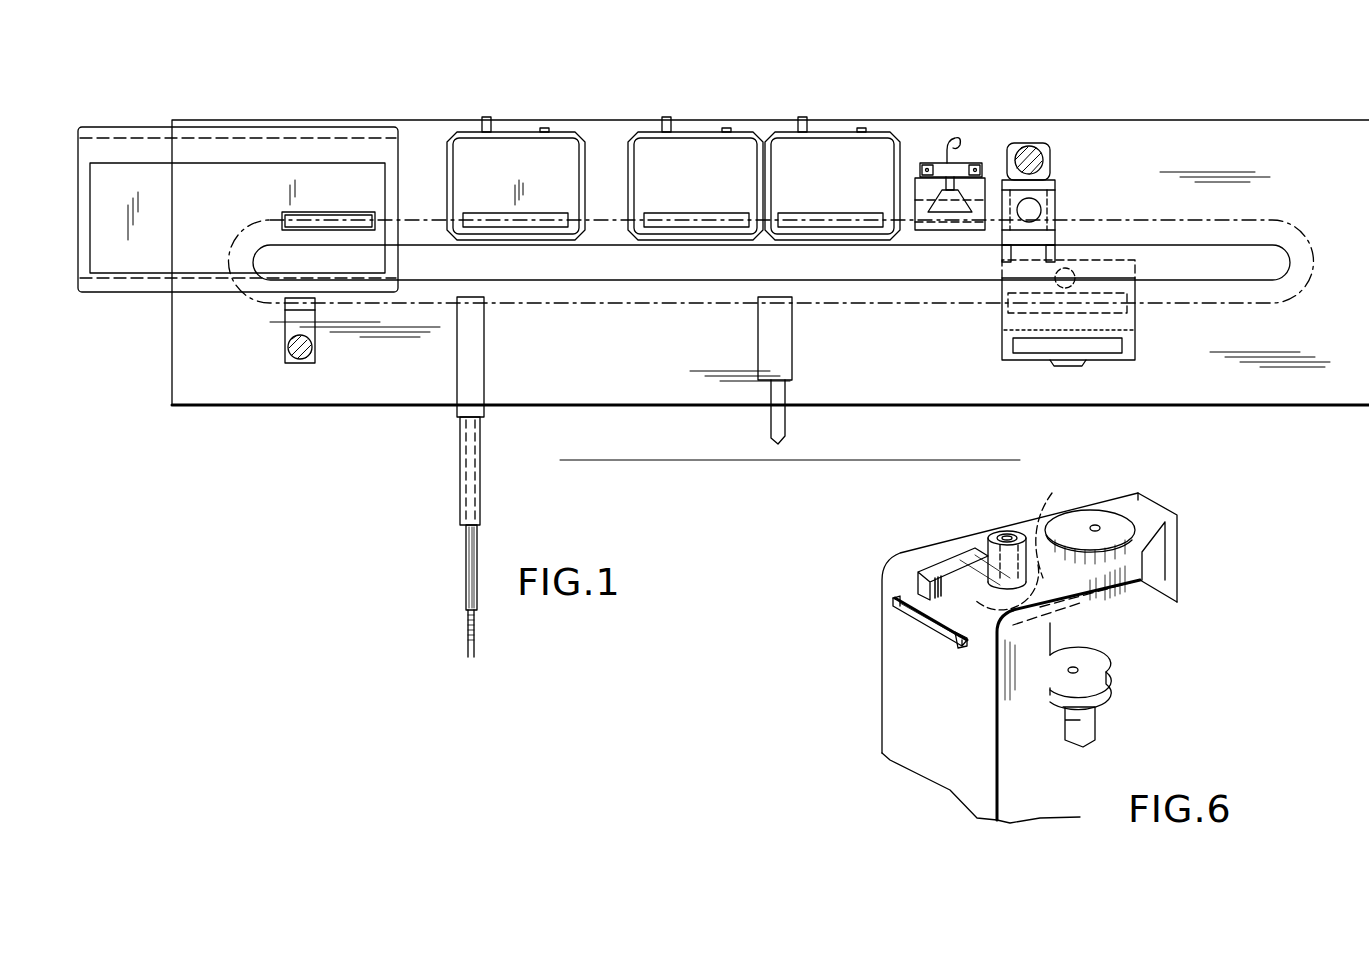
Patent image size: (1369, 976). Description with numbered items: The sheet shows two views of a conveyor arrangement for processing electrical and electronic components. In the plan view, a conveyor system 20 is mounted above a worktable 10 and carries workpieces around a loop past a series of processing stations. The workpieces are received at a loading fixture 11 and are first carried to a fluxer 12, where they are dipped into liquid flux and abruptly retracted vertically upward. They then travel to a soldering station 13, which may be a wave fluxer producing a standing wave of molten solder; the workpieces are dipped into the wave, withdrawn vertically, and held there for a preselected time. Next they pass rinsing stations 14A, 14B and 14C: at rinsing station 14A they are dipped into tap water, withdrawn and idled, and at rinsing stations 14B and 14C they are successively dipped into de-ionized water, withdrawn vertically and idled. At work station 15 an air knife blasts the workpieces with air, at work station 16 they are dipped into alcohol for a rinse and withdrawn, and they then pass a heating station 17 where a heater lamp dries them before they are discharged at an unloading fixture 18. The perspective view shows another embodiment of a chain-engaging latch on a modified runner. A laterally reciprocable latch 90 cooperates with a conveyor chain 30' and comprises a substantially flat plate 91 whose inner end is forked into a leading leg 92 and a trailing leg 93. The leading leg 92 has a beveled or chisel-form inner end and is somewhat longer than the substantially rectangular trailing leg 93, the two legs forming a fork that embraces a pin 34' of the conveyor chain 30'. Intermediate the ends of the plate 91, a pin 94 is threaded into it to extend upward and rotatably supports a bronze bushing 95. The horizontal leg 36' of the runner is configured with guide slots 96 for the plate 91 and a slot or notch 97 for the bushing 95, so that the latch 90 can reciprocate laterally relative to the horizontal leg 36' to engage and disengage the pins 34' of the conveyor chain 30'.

In FIG. 1, the worktable 10 is at (1168, 138).
In FIG. 1, the loading fixture 11 is at (458, 501).
In FIG. 1, the fluxer 12 is at (297, 326).
In FIG. 1, the soldering station 13 is at (243, 180).
In FIG. 1, the rinsing station 14A is at (512, 162).
In FIG. 1, the rinsing station 14B is at (690, 160).
In FIG. 1, the rinsing station 14C is at (822, 160).
In FIG. 1, the work station 15 is at (960, 170).
In FIG. 1, the work station 16 is at (1040, 200).
In FIG. 1, the heating station 17 is at (1126, 325).
In FIG. 1, the unloading fixture 18 is at (781, 352).
In FIG. 1, the conveyor system 20 is at (1284, 226).
In FIG. 6, the conveyor chain 30' is at (1049, 640).
In FIG. 6, the pin 34' is at (1105, 494).
In FIG. 6, the horizontal leg 36' is at (984, 682).
In FIG. 6, the latch 90 is at (927, 585).
In FIG. 6, the plate 91 is at (937, 630).
In FIG. 6, the leading leg 92 is at (1046, 535).
In FIG. 6, the trailing leg 93 is at (1108, 595).
In FIG. 6, the pin 94 is at (1007, 533).
In FIG. 6, the bronze bushing 95 is at (998, 568).
In FIG. 6, the guide slots 96 is at (895, 603).
In FIG. 6, the slot or notch 97 is at (905, 612).